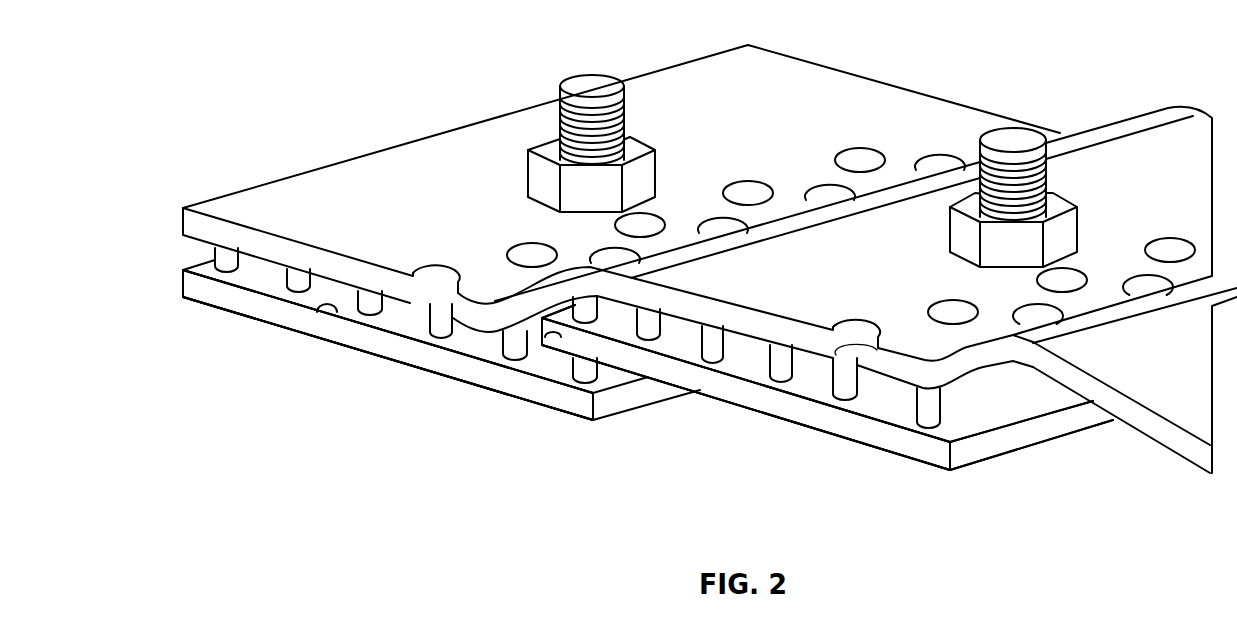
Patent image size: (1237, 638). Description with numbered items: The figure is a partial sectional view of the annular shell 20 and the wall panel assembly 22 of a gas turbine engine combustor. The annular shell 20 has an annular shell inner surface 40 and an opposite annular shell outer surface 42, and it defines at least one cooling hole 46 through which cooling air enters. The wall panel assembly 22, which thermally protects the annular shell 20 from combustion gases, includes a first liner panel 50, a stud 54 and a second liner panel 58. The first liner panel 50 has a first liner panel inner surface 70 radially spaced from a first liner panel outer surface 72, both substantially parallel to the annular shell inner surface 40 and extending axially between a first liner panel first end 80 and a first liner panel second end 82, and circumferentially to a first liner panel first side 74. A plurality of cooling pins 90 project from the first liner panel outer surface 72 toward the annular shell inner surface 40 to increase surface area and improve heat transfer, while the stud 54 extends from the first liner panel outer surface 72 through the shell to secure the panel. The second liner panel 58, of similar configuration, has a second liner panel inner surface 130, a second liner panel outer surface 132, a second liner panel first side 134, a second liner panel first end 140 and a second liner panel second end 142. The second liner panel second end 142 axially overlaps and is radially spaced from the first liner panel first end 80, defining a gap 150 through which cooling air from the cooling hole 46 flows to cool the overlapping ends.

The annular shell 20 is at (811, 82).
The wall panel assembly 22 is at (660, 455).
The annular shell inner surface 40 is at (195, 238).
The annular shell outer surface 42 is at (222, 213).
The cooling hole 46 is at (862, 135).
The first liner panel 50 is at (789, 432).
The stud 54 is at (593, 87).
The second liner panel 58 is at (474, 396).
The first liner panel inner surface 70 is at (920, 460).
The first liner panel outer surface 72 is at (943, 433).
The first liner panel first side 74 is at (883, 440).
The first liner panel first end 80 is at (563, 370).
The first liner panel second end 82 is at (967, 455).
The cooling pins 90 is at (387, 312).
The second liner panel inner surface 130 is at (315, 334).
The second liner panel outer surface 132 is at (322, 314).
The second liner panel first side 134 is at (272, 315).
The second liner panel first end 140 is at (182, 283).
The second liner panel second end 142 is at (597, 407).
The gap 150 is at (549, 339).